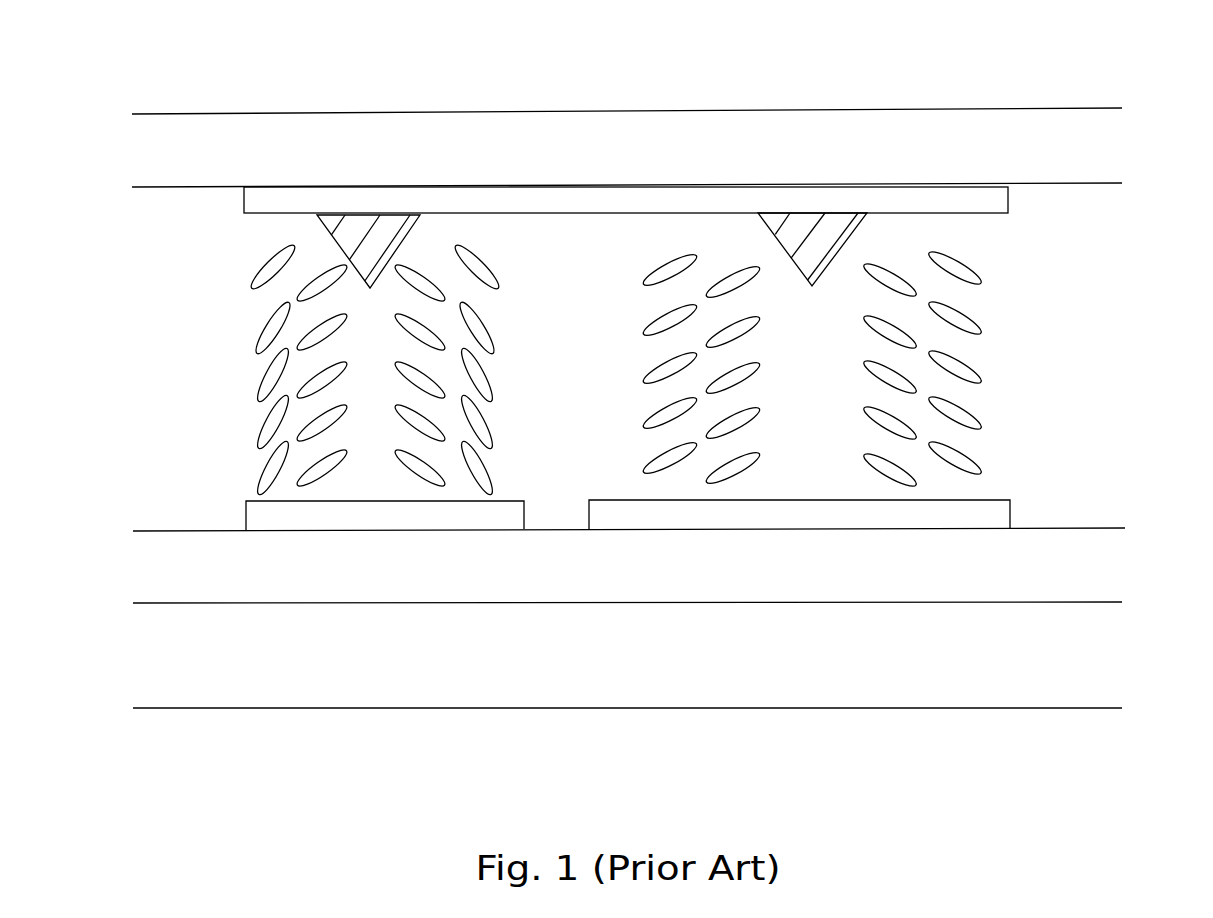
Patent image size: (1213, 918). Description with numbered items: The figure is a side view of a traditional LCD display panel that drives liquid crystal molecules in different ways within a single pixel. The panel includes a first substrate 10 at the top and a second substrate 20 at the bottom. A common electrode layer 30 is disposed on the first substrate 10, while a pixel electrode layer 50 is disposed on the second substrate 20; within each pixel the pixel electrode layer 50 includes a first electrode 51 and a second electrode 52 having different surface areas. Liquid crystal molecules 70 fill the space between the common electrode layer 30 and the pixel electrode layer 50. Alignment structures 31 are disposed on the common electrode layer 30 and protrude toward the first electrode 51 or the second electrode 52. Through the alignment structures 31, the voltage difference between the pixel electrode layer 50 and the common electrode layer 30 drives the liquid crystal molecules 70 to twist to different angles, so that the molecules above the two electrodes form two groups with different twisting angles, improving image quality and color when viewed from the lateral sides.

The first substrate 10 is at (1093, 135).
The second substrate 20 is at (1071, 674).
The common electrode layer 30 is at (258, 201).
The alignment structure 31 is at (333, 223).
The pixel electrode layer 50 is at (1130, 490).
The first electrode 51 is at (256, 517).
The second electrode 52 is at (1000, 515).
The liquid crystal molecules 70 is at (1018, 495).